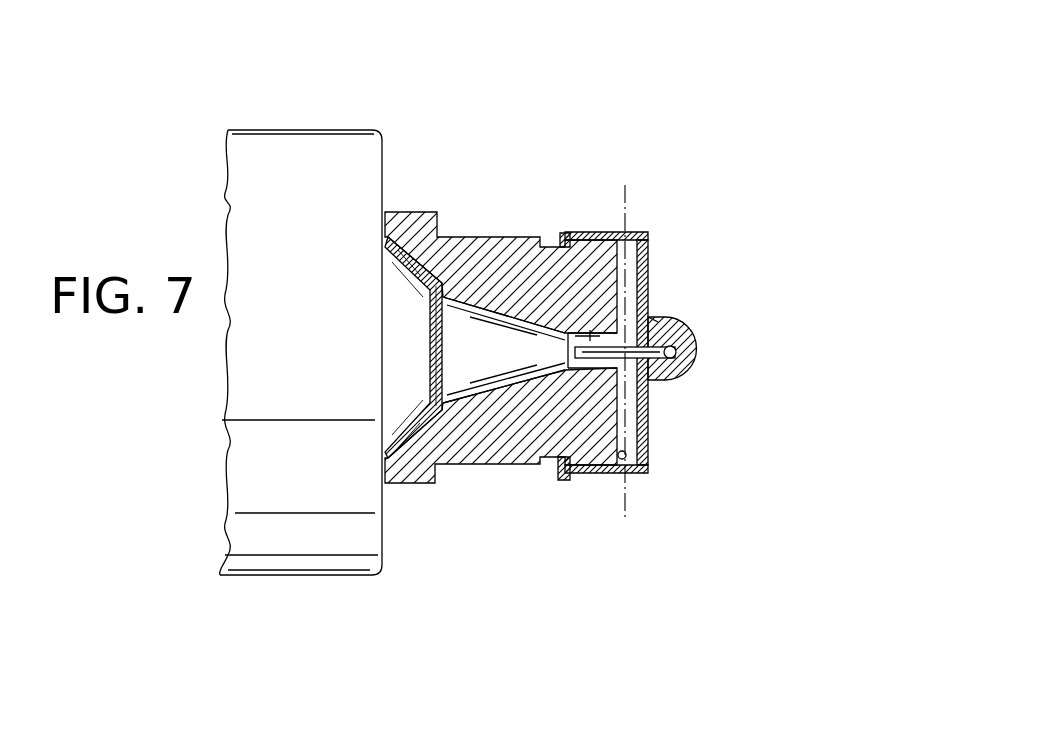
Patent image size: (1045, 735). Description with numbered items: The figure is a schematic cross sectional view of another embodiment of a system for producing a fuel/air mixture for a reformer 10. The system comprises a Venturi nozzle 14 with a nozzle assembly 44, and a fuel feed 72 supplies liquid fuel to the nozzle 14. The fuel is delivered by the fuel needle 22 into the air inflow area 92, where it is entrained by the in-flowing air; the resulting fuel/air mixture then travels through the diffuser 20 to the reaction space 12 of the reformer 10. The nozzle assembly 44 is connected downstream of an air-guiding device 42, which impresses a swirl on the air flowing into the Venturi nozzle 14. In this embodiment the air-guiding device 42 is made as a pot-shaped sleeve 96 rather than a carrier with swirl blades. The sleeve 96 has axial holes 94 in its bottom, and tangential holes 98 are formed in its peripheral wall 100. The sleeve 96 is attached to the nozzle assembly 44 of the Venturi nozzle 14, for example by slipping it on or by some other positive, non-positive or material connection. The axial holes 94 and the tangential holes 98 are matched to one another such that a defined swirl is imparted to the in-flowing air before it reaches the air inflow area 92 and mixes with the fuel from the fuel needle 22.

The reformer 10 is at (232, 128).
The reaction space 12 is at (342, 150).
The Venturi nozzle 14 is at (613, 357).
The diffuser 20 is at (495, 343).
The fuel needle 22 is at (665, 322).
The air-guiding device 42 is at (699, 389).
The nozzle assembly 44 is at (516, 425).
The fuel feed 72 is at (704, 352).
The air inflow area 92 is at (598, 333).
The axial holes 94 is at (648, 297).
The pot-shaped sleeve 96 is at (655, 252).
The tangential holes 98 is at (650, 475).
The peripheral wall 100 is at (575, 480).